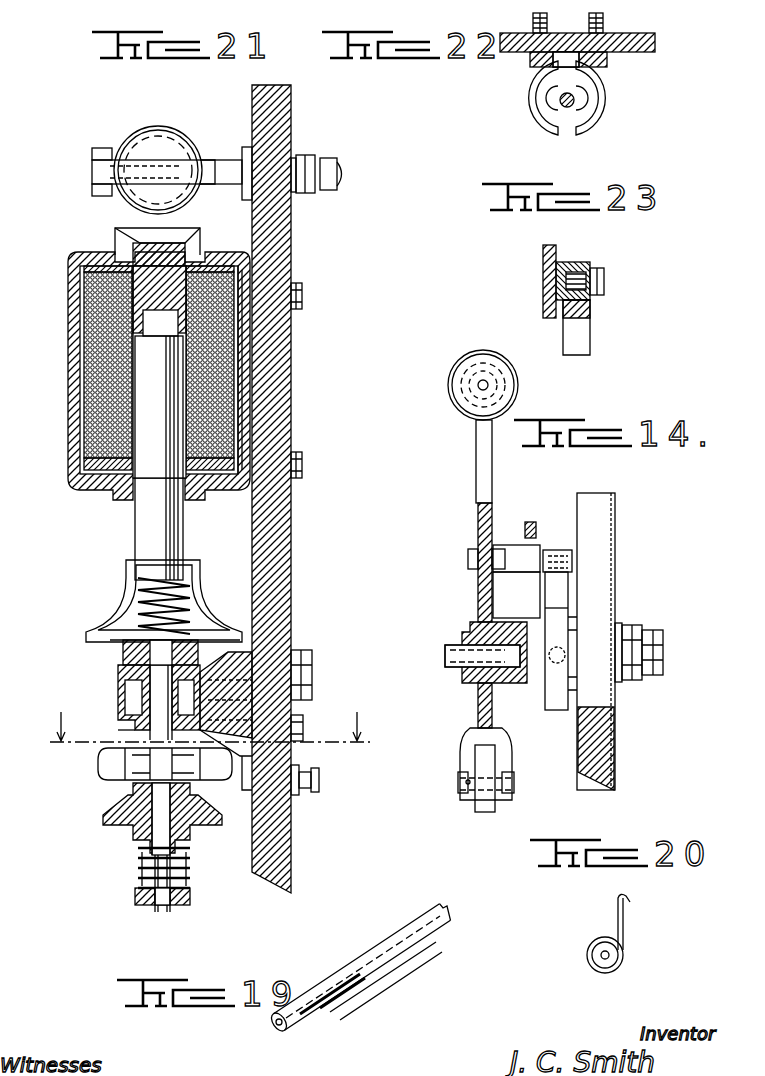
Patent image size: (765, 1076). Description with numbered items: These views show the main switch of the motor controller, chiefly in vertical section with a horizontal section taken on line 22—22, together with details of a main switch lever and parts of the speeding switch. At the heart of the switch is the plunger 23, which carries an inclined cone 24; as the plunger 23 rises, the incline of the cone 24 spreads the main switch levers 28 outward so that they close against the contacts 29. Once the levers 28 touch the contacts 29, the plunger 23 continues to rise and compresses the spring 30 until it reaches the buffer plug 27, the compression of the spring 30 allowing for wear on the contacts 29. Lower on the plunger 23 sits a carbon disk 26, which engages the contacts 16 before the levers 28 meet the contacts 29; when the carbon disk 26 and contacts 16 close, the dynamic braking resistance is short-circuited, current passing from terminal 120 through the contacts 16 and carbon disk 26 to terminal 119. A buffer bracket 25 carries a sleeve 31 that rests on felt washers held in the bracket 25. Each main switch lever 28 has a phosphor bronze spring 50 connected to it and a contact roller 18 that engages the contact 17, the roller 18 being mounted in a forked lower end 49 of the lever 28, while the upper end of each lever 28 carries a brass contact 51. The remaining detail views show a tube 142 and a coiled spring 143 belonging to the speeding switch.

In FIG. 21, the contacts 16 is at (108, 762).
In FIG. 22, the contacts 16 is at (540, 108).
In FIG. 14, the contact 17 is at (540, 530).
In FIG. 14, the contact roller 18 is at (535, 568).
In FIG. 21, the section line 22— 22 is at (198, 735).
In FIG. 21, the plunger 23 is at (140, 528).
In FIG. 21, the cone 24 is at (120, 590).
In FIG. 21, the buffer bracket 25 is at (120, 692).
In FIG. 21, the carbon disk 26 is at (110, 822).
In FIG. 21, the buffer plug 27 is at (200, 232).
In FIG. 23, the main switch lever 28 is at (590, 332).
In FIG. 14, the main switch lever 28 is at (486, 472).
In FIG. 21, the contact 29 is at (175, 158).
In FIG. 21, the spring 30 is at (195, 592).
In FIG. 21, the sleeve 31 is at (120, 724).
In FIG. 14, the roller 49 is at (485, 808).
In FIG. 14, the phosphor bronze spring 50 is at (556, 710).
In FIG. 23, the brass contact 51 is at (545, 285).
In FIG. 14, the brass contact 51 is at (458, 400).
In FIG. 22, the terminal 119 is at (552, 20).
In FIG. 22, the terminal 120 is at (604, 22).
In FIG. 19, the tube 142 is at (352, 985).
In FIG. 20, the spring 143 is at (624, 936).